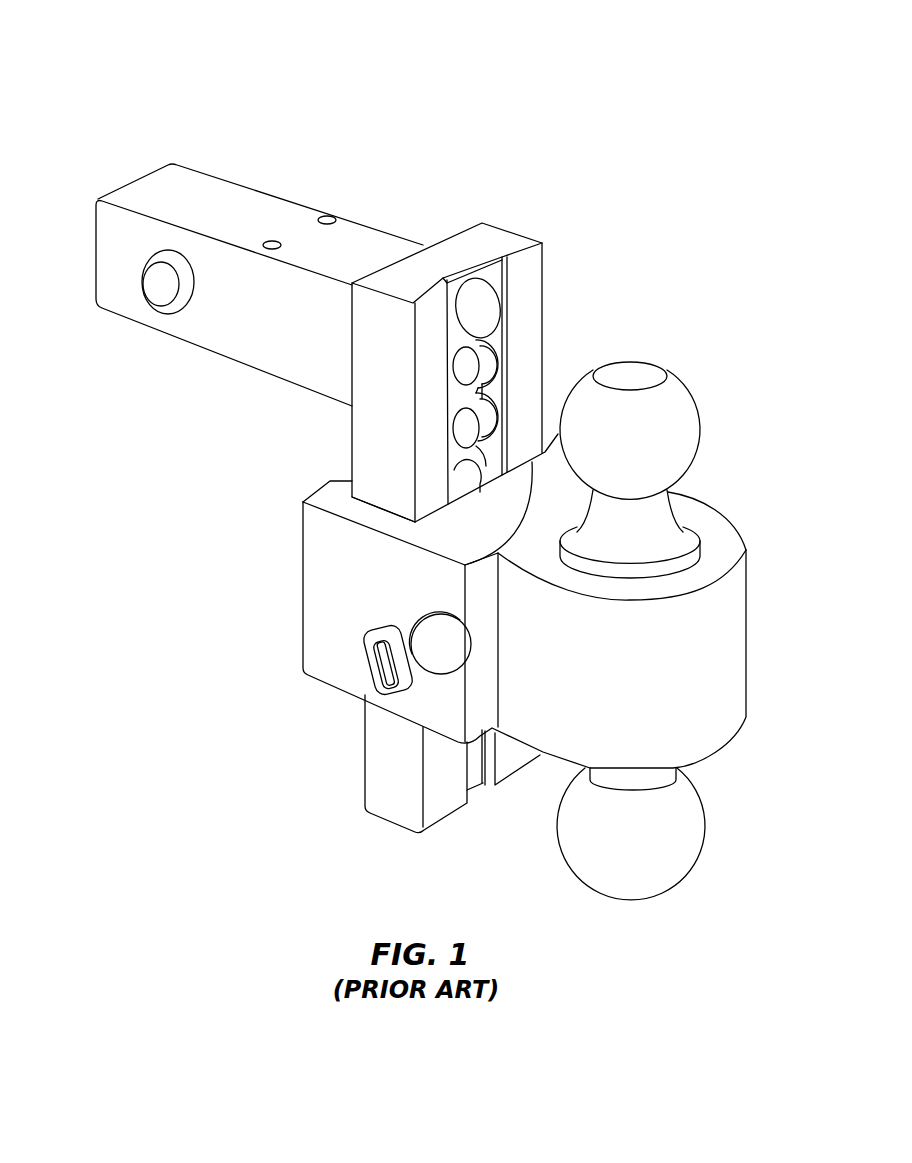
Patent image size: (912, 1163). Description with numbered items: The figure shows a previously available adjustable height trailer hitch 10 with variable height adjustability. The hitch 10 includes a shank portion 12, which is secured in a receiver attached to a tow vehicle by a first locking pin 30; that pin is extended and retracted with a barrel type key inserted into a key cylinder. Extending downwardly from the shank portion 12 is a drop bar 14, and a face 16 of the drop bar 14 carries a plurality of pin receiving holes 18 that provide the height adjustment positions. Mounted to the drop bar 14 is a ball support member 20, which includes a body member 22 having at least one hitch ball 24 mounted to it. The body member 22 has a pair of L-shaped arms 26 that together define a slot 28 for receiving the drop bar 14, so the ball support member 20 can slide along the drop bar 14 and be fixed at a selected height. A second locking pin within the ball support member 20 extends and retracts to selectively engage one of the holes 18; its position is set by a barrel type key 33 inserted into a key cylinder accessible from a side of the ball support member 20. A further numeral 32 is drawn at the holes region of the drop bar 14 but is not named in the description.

The adjustable height trailer hitch 10 is at (117, 130).
The shank portion 12 is at (250, 215).
The drop bar 14 is at (530, 318).
The face 16 is at (530, 357).
The pin receiving holes 18 is at (482, 355).
The ball support member 20 is at (746, 553).
The body member 22 is at (713, 662).
The hitch ball 24 is at (680, 410).
The L-shaped arms 26 is at (470, 533).
The slot 28 is at (447, 498).
The first locking pin 30 is at (145, 278).
The adjustment holes 32 is at (457, 277).
The barrel type key 33 is at (362, 648).